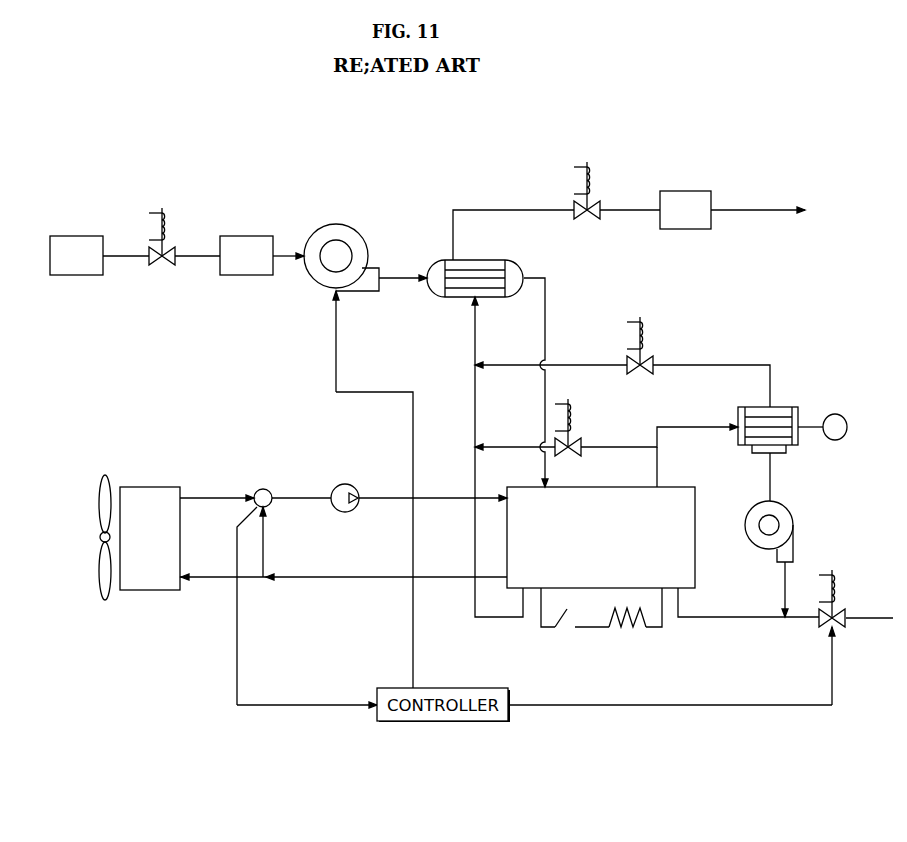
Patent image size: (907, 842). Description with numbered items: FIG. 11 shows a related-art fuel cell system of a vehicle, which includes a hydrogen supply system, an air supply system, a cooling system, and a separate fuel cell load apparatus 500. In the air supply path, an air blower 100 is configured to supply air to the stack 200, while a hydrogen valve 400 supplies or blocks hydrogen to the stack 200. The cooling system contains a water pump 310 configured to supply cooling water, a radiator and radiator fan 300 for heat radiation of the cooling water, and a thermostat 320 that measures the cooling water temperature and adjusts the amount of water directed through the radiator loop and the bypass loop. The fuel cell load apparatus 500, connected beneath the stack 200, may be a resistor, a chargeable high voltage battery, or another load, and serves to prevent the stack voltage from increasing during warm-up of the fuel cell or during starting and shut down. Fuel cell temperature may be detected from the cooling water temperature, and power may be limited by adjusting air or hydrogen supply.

The air blower 100 is at (336, 222).
The stack 200 is at (685, 486).
The radiator and radiator fan 300 is at (150, 487).
The water pump 310 is at (345, 484).
The thermostat 320 is at (263, 489).
The hydrogen valve 400 is at (840, 609).
The fuel cell load apparatus 500 is at (630, 630).